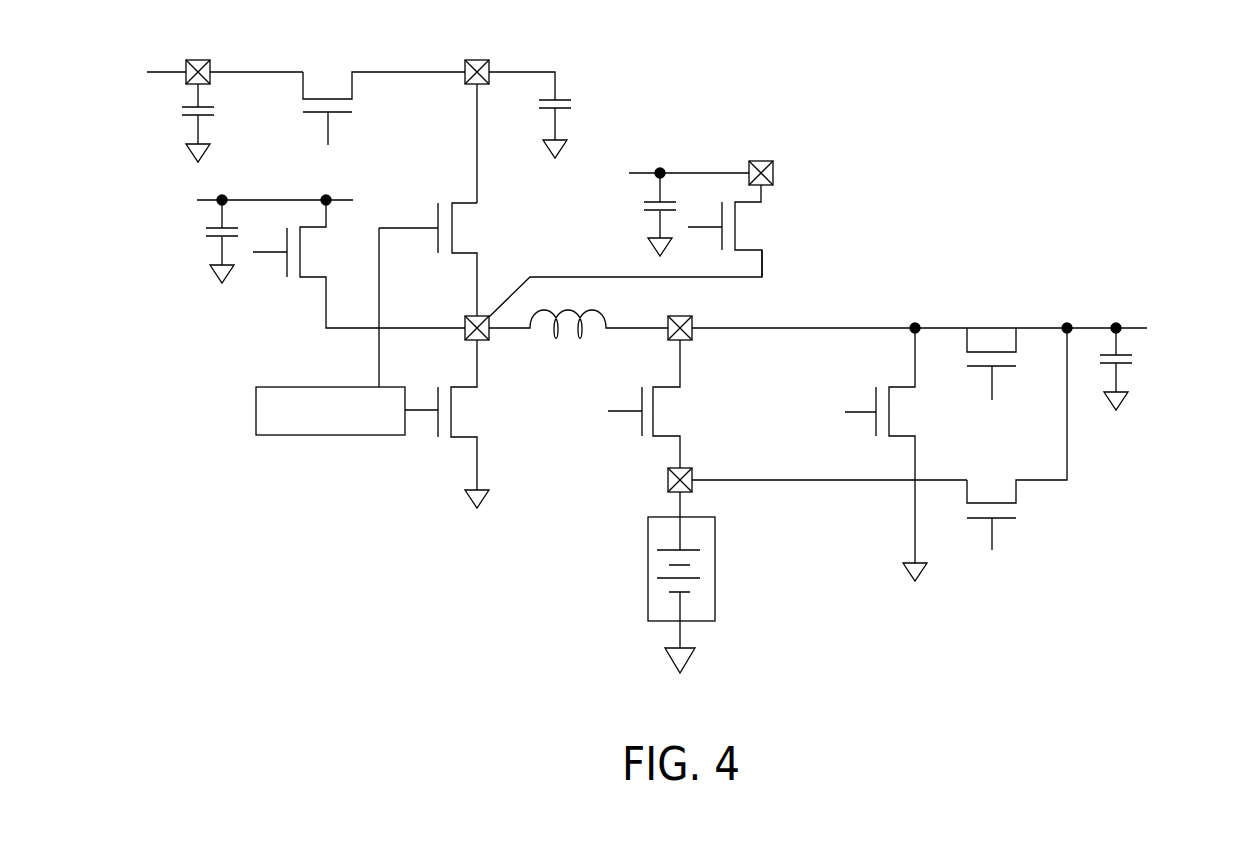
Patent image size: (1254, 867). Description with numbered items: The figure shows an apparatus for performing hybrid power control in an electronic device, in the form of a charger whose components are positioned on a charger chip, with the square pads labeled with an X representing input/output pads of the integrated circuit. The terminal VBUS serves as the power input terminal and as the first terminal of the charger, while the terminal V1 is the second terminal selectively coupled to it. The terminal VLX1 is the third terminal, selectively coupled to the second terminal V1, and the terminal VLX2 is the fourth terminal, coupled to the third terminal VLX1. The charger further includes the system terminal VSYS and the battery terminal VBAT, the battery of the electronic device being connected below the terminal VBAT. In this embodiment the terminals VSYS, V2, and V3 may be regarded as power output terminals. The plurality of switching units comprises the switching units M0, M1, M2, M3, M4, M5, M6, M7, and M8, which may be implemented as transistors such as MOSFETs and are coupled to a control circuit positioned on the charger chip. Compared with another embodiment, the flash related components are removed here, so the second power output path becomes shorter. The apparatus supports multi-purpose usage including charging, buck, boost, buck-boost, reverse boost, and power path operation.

The switching unit M0 is at (473, 424).
The switching unit M1 is at (443, 259).
The switching unit M2 is at (384, 100).
The switching unit M3 is at (739, 231).
The switching unit M4 is at (659, 404).
The switching unit M5 is at (894, 454).
The switching unit M6 is at (359, 264).
The switching unit M7 is at (1017, 439).
The switching unit M8 is at (991, 354).
The terminal VBUS is at (225, 93).
The terminal V1 is at (502, 123).
The terminal V2 is at (701, 199).
The terminal V3 is at (275, 224).
The terminal VLX1 is at (577, 295).
The terminal VLX2 is at (907, 318).
The battery terminal VBAT is at (778, 568).
The system terminal VSYS is at (1161, 363).